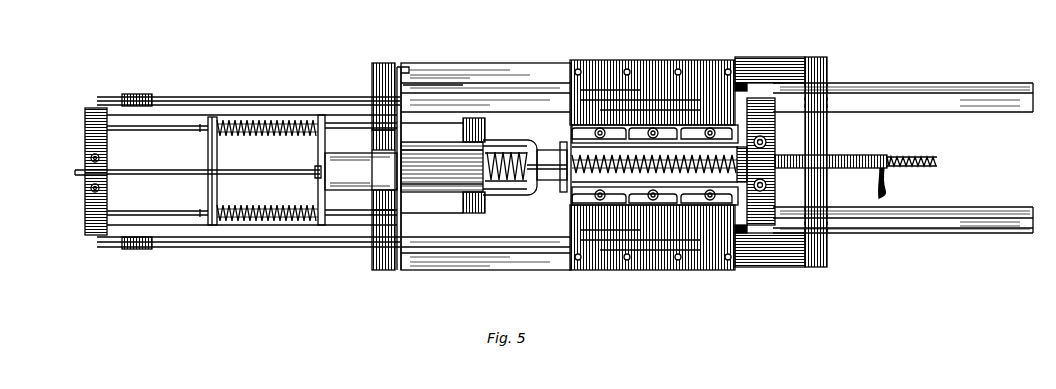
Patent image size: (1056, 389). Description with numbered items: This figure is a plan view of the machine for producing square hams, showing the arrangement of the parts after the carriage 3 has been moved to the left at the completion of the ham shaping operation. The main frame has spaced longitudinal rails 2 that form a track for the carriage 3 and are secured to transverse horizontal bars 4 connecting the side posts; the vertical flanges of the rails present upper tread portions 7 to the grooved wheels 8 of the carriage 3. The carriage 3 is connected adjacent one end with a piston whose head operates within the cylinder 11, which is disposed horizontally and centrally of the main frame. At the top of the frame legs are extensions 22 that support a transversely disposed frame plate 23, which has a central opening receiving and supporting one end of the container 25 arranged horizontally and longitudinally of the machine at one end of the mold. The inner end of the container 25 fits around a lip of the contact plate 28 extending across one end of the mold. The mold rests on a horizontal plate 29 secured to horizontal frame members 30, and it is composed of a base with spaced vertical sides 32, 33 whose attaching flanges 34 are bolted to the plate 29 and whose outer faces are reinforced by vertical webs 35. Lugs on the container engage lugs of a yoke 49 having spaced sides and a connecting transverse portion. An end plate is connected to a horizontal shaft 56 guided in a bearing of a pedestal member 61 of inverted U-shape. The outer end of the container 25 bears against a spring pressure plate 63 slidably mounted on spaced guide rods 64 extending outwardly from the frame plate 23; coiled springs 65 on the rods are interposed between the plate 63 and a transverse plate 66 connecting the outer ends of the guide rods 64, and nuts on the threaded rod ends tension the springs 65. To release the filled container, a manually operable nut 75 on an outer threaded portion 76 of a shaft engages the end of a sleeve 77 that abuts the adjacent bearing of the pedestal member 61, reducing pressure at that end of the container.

The longitudinal rails 2 is at (880, 97).
The carriage 3 is at (158, 128).
The transverse horizontal bars 4 is at (374, 250).
The upper tread portions 7 is at (898, 230).
The grooved wheels 8 is at (142, 97).
The cylinder 11 is at (552, 184).
The extensions 22 is at (399, 67).
The frame plate 23 is at (405, 86).
The container 25 is at (432, 166).
The contact plate 28 is at (563, 143).
The horizontal plate 29 is at (658, 76).
The horizontal frame members 30 is at (528, 70).
The mold side 32 is at (642, 206).
The mold side 33 is at (634, 128).
The attaching flanges 34 is at (667, 130).
The vertical webs 35 is at (666, 132).
The yoke 49 is at (519, 150).
The horizontal shaft 56 is at (150, 170).
The pedestal member 61 is at (762, 128).
The spring pressure plate 63 is at (322, 115).
The guide rods 64 is at (360, 125).
The coiled springs 65 is at (246, 118).
The transverse plate 66 is at (208, 192).
The manually operable nut 75 is at (894, 155).
The threaded portion 76 is at (923, 164).
The sleeve 77 is at (847, 155).